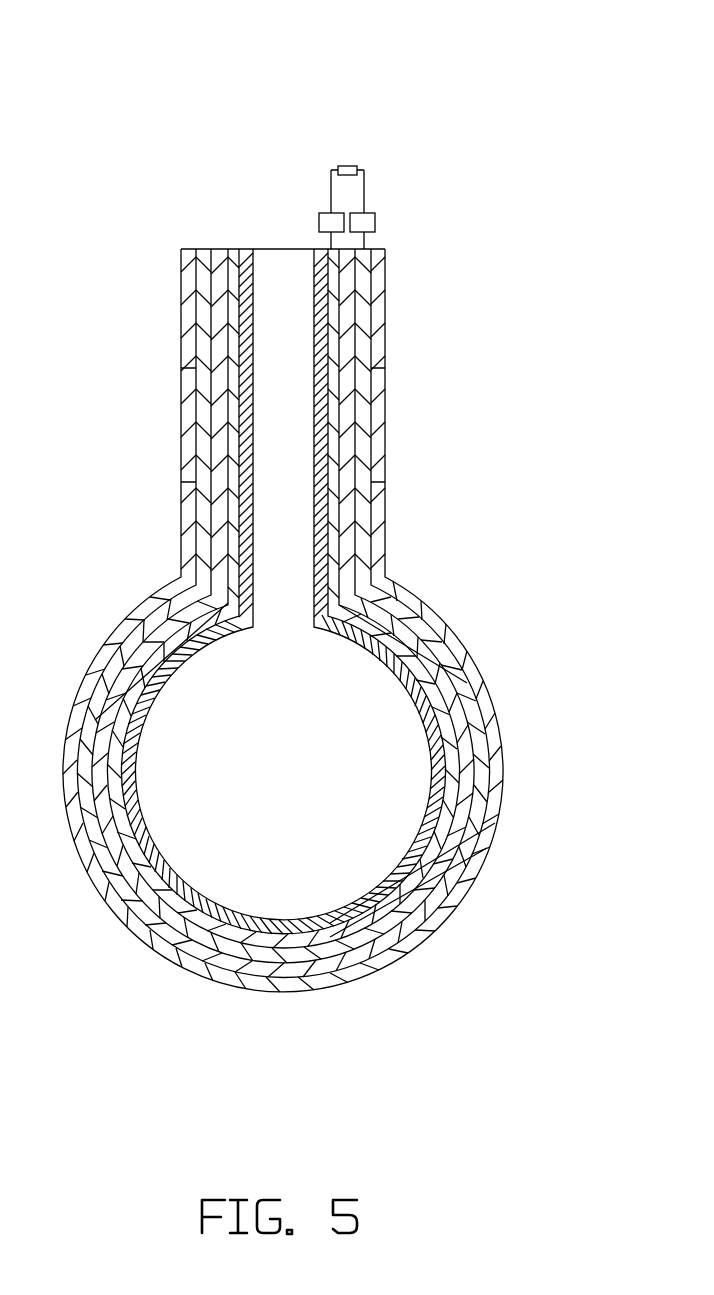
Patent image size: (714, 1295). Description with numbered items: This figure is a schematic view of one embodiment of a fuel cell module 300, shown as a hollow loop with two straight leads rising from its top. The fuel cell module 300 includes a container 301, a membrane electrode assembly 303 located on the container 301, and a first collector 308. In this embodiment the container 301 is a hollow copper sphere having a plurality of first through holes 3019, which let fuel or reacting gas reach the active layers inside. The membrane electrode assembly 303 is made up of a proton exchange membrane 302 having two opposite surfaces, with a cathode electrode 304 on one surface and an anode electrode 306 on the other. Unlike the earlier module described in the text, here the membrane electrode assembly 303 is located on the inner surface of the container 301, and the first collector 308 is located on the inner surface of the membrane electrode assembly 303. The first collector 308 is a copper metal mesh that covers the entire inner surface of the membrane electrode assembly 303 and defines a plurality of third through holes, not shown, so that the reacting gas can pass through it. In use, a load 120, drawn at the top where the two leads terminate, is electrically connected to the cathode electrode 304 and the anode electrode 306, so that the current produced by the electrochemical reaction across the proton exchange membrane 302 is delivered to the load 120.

The fuel cell module 300 is at (354, 501).
The load 120 is at (352, 166).
The container 301 is at (417, 601).
The anode electrode 306 is at (444, 637).
The proton exchange membrane 302 is at (447, 693).
The cathode electrode 304 is at (450, 750).
The membrane electrode assembly 303 is at (354, 777).
The first collector 308 is at (427, 822).
The first through holes 3019 is at (470, 883).